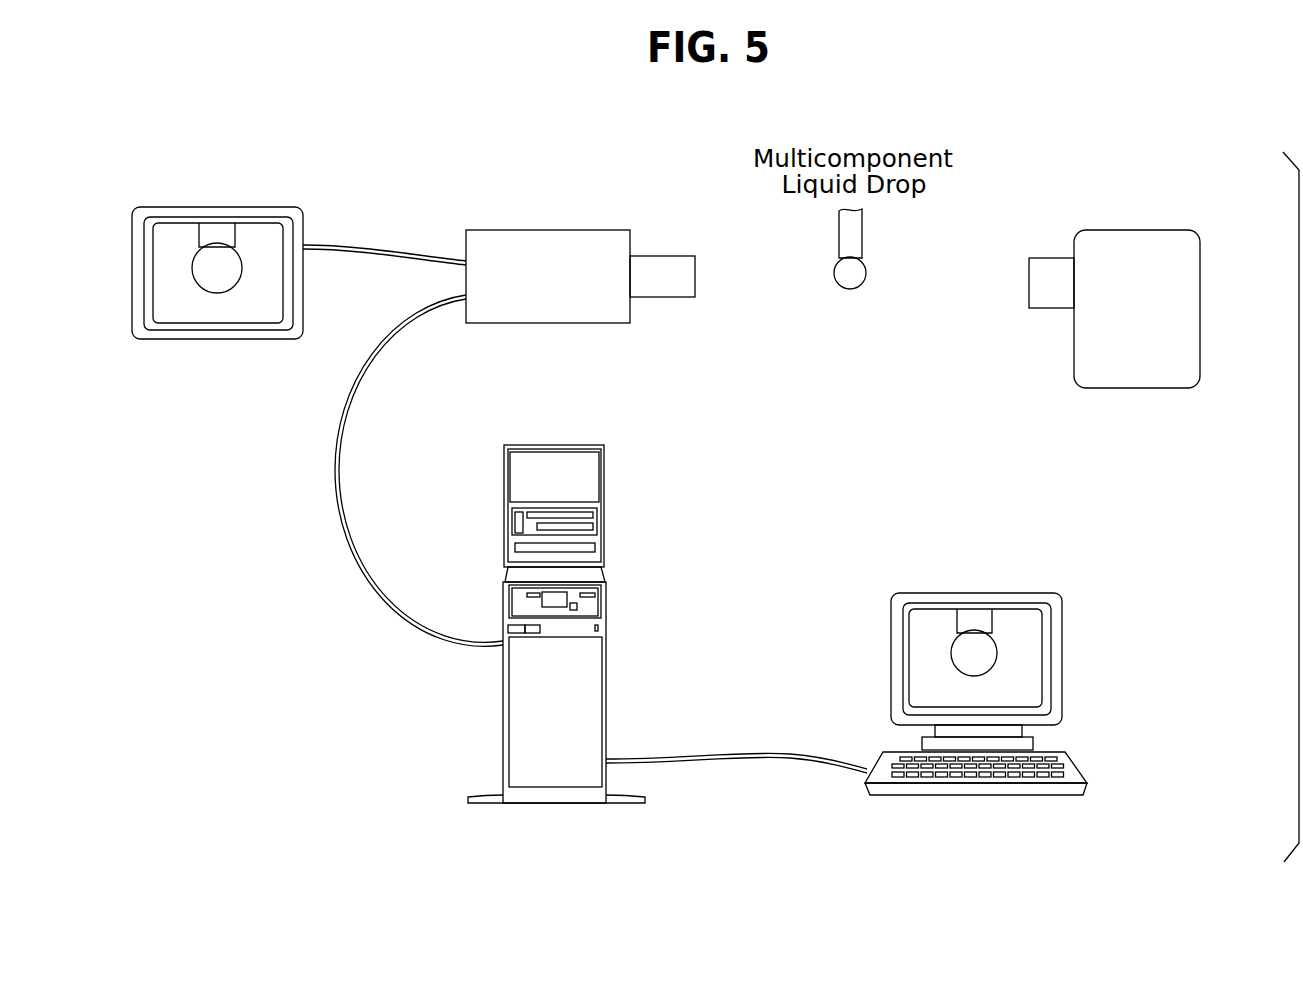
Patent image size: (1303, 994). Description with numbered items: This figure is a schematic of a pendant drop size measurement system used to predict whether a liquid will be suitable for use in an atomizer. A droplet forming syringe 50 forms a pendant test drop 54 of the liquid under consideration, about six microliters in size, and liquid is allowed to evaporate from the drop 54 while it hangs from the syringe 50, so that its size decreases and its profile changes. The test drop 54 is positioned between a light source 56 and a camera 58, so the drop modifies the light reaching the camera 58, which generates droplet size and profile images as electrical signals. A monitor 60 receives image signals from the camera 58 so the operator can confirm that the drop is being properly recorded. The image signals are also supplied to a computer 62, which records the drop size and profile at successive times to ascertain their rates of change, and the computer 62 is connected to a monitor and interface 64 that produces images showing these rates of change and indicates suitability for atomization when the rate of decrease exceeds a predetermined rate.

The droplet forming syringe 50 is at (862, 235).
The pendant test drop 54 is at (865, 277).
The light source 56 is at (1085, 358).
The camera 58 is at (553, 317).
The monitor 60 is at (207, 205).
The computer 62 is at (503, 720).
The monitor and interface 64 is at (968, 592).